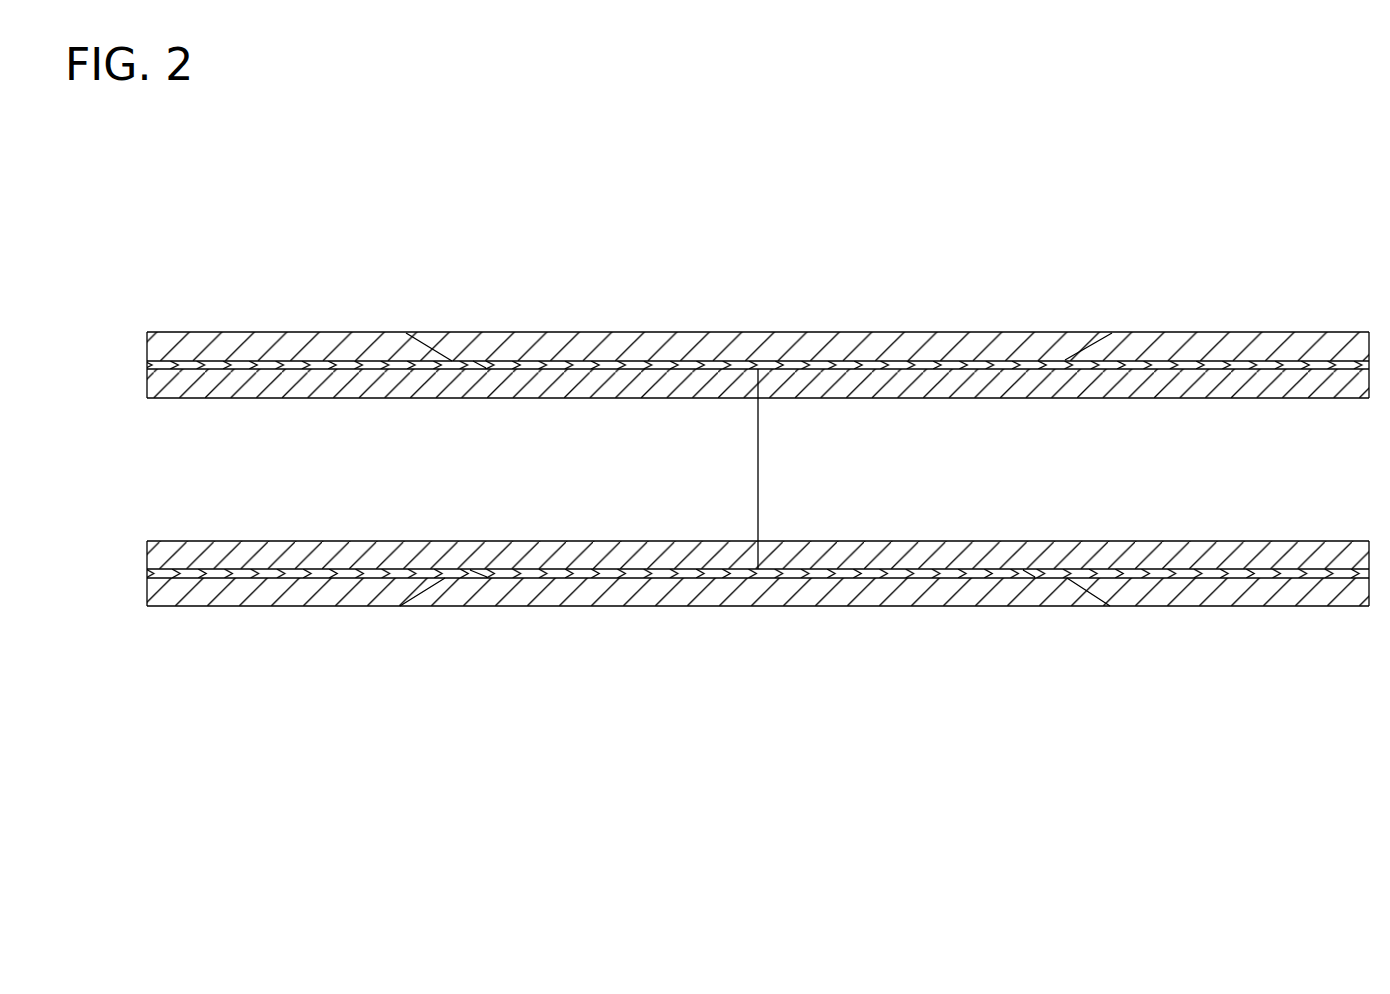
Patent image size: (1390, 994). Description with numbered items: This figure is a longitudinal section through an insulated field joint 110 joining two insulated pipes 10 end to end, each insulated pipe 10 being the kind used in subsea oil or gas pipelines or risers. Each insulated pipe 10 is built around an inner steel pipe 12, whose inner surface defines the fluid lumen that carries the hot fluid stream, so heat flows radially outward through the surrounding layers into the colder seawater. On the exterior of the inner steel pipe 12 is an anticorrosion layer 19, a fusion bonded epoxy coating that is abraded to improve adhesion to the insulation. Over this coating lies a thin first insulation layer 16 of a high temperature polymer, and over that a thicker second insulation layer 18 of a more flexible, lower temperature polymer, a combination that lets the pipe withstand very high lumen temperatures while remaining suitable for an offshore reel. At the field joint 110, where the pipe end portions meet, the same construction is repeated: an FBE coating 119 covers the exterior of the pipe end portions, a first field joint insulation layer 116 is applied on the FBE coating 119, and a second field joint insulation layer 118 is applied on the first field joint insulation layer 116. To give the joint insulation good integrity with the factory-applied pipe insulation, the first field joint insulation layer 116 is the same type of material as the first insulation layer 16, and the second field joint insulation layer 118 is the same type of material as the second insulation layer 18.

The insulated pipe 10 is at (236, 632).
The inner steel pipe 12 is at (993, 383).
The first insulation layer 16 is at (243, 368).
The second insulation layer 18 is at (326, 345).
The anticorrosion layer 19 is at (1165, 371).
The insulated field joint 110 is at (767, 625).
The first field joint insulation layer 116 is at (652, 368).
The second field joint insulation layer 118 is at (515, 343).
The FBE coating 119 is at (830, 369).